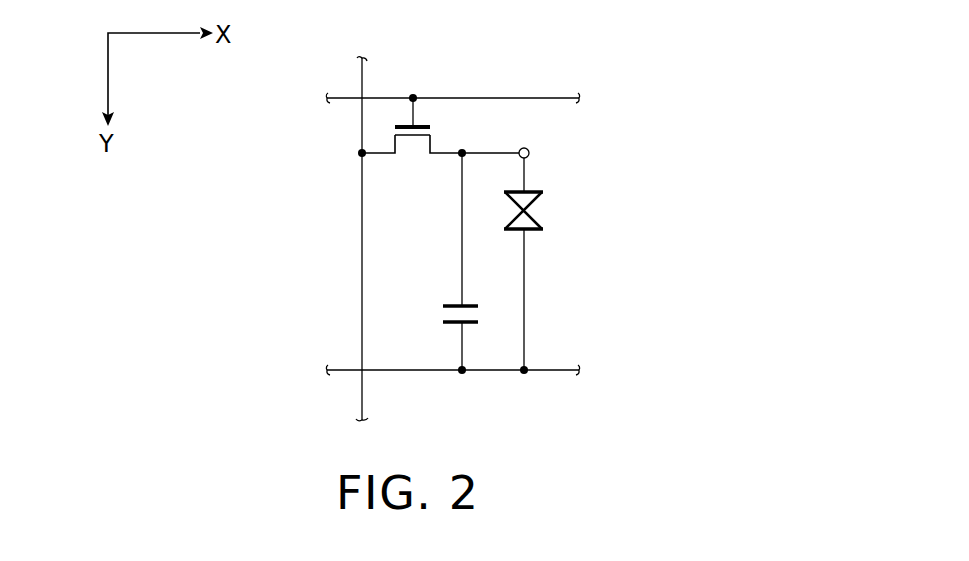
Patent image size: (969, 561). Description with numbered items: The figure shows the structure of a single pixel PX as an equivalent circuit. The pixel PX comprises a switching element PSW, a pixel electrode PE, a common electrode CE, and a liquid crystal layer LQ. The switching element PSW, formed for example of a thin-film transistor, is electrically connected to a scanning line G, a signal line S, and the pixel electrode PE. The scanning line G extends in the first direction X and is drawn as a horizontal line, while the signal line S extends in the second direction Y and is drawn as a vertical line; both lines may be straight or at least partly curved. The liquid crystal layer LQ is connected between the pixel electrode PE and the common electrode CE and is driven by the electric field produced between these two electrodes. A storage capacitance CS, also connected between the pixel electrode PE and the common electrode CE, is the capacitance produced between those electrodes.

The pixel PX is at (628, 134).
The scanning line G is at (345, 98).
The signal line S is at (362, 205).
The switching element PSW is at (446, 136).
The pixel electrode PE is at (529, 153).
The liquid crystal layer LQ is at (554, 208).
The storage capacitance CS is at (433, 310).
The common electrode CE is at (553, 372).